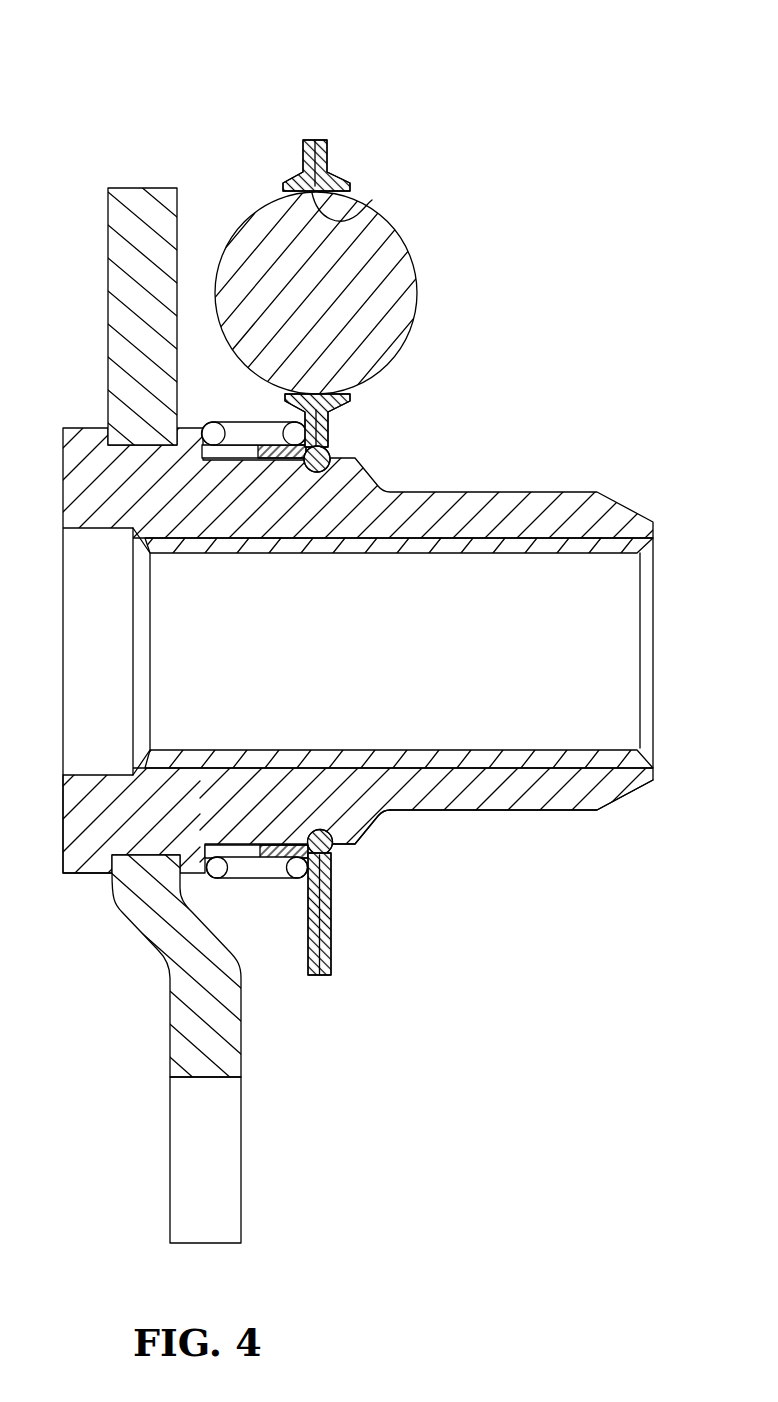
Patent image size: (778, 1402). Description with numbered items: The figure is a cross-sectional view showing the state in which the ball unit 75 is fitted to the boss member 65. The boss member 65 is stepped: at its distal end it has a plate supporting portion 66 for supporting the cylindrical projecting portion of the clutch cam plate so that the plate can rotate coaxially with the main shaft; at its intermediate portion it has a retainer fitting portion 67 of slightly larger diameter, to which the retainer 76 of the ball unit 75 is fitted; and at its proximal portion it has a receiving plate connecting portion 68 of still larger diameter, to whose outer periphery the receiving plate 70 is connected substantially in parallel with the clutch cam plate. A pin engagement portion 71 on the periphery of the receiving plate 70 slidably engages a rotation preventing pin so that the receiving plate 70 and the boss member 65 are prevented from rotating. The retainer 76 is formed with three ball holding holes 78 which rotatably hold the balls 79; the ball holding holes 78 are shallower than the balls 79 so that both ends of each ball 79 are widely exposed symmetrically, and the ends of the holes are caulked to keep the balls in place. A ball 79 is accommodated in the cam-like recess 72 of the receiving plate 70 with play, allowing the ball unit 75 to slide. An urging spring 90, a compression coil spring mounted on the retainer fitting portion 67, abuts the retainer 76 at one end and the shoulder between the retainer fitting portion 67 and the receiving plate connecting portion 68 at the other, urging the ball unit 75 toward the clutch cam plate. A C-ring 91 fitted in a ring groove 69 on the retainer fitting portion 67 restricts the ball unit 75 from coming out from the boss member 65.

The boss member 65 is at (551, 491).
The plate supporting portion 66 is at (520, 784).
The retainer fitting portion 67 is at (337, 808).
The receiving plate connecting portion 68 is at (73, 874).
The ring groove 69 is at (333, 843).
The receiving plate 70 is at (133, 198).
The pin engagement portion 71 is at (197, 1157).
The cam-like recess 72 is at (178, 230).
The ball unit 75 is at (318, 137).
The retainer 76 is at (327, 150).
The ball holding hole 78 is at (372, 200).
The ball 79 is at (408, 302).
The urging spring 90 is at (298, 870).
The C-ring 91 is at (336, 864).